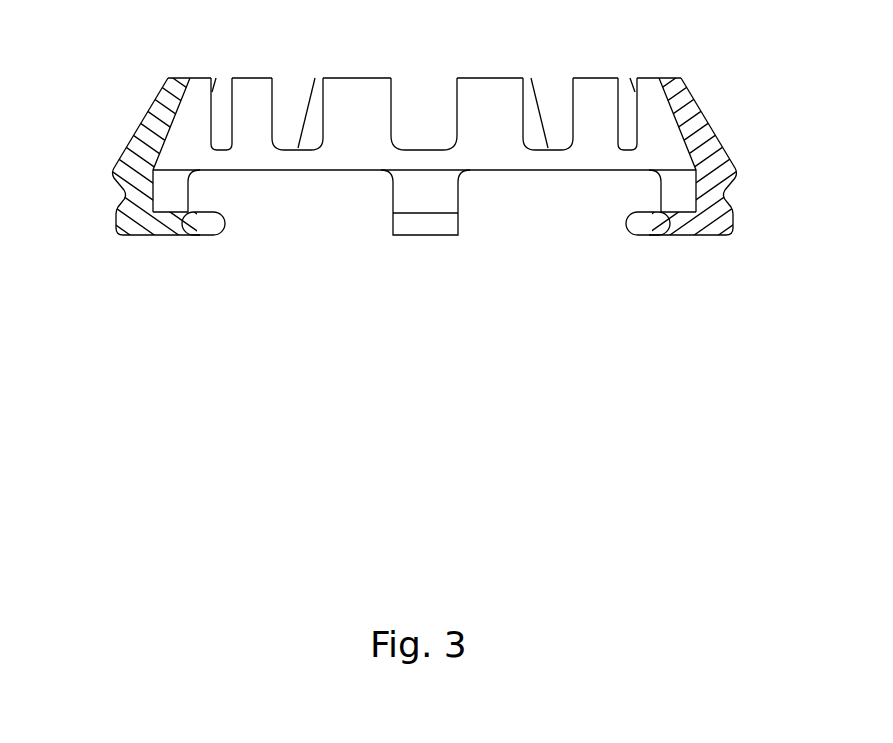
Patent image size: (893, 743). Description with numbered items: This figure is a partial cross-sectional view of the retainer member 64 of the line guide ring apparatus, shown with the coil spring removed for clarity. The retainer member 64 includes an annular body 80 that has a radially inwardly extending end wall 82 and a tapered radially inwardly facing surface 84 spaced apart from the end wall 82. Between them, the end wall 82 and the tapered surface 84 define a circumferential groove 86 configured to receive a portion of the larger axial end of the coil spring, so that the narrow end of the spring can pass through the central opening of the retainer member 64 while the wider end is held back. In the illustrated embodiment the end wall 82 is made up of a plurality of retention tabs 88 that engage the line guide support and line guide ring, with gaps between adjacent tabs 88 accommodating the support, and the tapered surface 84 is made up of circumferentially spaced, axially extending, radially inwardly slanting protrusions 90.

The retainer member 64 is at (90, 212).
The annular body 80 is at (495, 103).
The end wall 82 is at (182, 225).
The tapered radially inwardly facing surface 84 is at (200, 147).
The circumferential groove 86 is at (672, 183).
The retention tabs 88 is at (217, 225).
The protrusions 90 is at (200, 147).